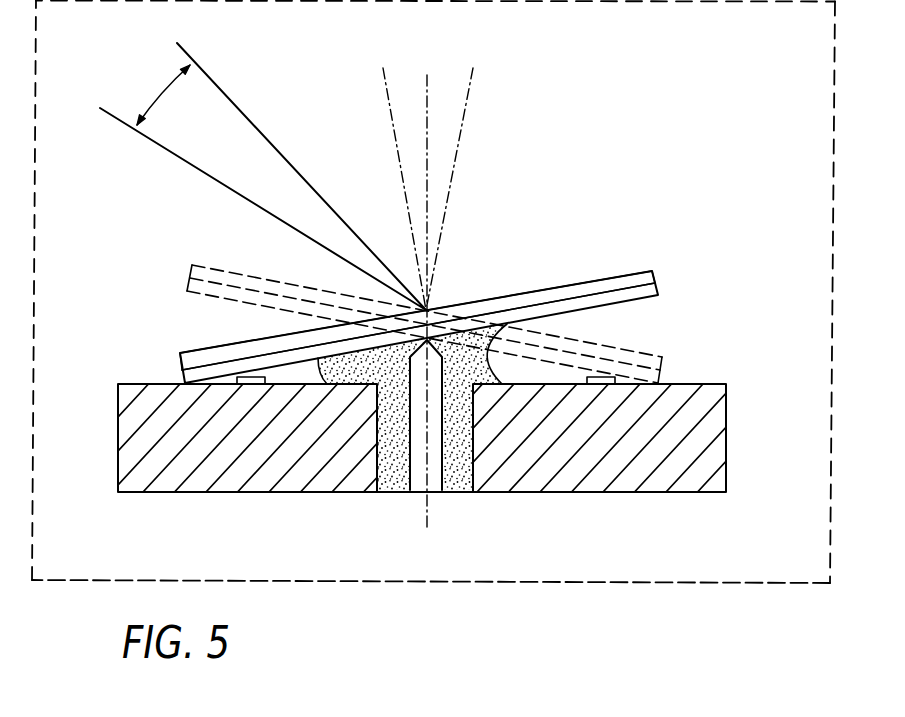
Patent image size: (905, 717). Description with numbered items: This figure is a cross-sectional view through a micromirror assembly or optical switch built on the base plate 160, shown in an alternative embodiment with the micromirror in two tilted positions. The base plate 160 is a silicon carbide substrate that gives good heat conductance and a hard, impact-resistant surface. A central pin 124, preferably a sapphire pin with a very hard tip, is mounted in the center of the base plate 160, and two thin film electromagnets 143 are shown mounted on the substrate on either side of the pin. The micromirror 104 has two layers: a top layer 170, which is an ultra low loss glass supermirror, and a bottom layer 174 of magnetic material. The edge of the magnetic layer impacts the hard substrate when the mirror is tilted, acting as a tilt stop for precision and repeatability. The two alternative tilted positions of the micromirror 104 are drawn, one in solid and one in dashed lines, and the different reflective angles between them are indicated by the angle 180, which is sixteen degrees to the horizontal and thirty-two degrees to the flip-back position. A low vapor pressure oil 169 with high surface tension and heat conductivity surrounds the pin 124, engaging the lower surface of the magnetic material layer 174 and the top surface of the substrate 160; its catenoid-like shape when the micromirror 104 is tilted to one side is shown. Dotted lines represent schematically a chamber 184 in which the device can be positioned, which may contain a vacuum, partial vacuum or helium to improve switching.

The micromirror 104 is at (221, 277).
The central pin 124 is at (433, 437).
The thin film electromagnets 143 is at (253, 384).
The base plate 160 is at (700, 471).
The low vapor pressure oil 169 is at (370, 362).
The top layer 170 is at (653, 272).
The bottom layer 174 is at (655, 283).
The angle 180 is at (190, 63).
The chamber 184 is at (638, 583).